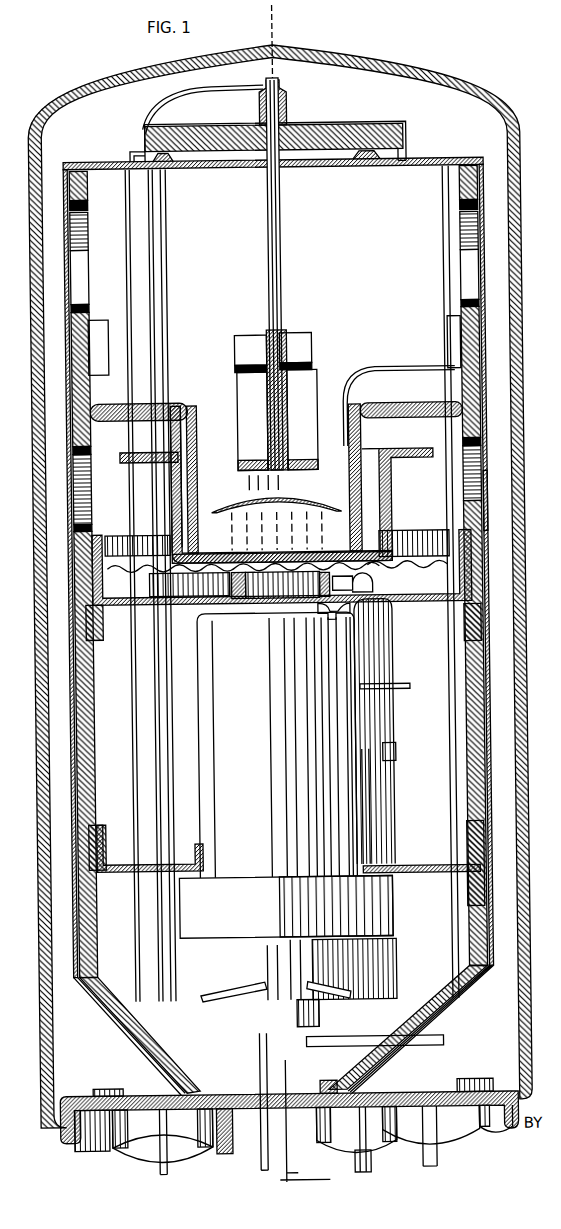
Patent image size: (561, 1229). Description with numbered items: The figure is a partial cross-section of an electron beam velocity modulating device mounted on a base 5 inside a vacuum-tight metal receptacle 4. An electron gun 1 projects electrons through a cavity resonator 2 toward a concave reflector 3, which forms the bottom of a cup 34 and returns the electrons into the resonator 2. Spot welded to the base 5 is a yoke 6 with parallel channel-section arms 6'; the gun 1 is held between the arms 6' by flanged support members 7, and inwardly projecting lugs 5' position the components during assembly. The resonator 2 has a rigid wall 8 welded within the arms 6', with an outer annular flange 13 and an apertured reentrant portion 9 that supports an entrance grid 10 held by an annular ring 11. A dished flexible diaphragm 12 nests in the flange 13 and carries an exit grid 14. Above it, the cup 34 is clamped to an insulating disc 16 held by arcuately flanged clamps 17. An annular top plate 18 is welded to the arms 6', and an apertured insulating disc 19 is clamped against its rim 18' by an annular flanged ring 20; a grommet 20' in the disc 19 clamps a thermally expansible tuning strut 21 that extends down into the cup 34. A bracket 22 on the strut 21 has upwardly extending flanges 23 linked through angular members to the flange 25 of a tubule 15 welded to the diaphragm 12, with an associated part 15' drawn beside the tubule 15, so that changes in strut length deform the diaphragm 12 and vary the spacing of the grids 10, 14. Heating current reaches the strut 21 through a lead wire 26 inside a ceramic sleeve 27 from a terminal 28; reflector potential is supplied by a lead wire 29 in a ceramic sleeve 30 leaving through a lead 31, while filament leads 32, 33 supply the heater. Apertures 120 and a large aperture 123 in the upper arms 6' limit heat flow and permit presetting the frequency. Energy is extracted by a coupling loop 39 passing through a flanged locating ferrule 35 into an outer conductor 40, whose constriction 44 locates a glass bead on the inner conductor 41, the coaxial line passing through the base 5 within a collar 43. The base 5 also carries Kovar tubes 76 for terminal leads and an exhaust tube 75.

The electron gun 1 is at (275, 701).
The cavity resonator 2 is at (276, 22).
The reflector 3 is at (240, 521).
The vacuum-tight receptacle 4 is at (521, 540).
The base 5 is at (289, 1104).
The inwardly projecting lugs 5' is at (285, 755).
The yoke 6 is at (352, 1084).
The arms 6' is at (280, 630).
The flanged support members 7 is at (422, 874).
The rigid wall portion 8 is at (152, 596).
The reentrant portion 9 is at (239, 585).
The entrance grid 10 is at (302, 575).
The annular ring 11 is at (228, 584).
The dished diaphragm 12 is at (392, 550).
The outer annular flange 13 is at (110, 535).
The exit grid 14 is at (292, 562).
The tubule 15 is at (186, 483).
The side lid 15' is at (149, 470).
The insulating disc 16 is at (173, 404).
The arcuately flanged clamps 17 is at (104, 350).
The annular top plate 18 is at (279, 620).
The rim 18' is at (267, 174).
The apertured insulating disc 19 is at (340, 131).
The annular flanged ring 20 is at (275, 142).
The grommet 20' is at (285, 102).
The tuning strut 21 is at (278, 211).
The bracket 22 is at (308, 376).
The upwardly extending flanges 23 is at (290, 338).
The flange 25 is at (413, 459).
The lead wire 26 is at (206, 98).
The insulating ceramic sleeve 27 is at (163, 278).
The terminal 28 is at (250, 1153).
The lead wire 29 is at (431, 379).
The insulating ceramic sleeve 30 is at (447, 705).
The lead 31 is at (436, 1153).
The filament lead 32 is at (266, 963).
The filament lead 33 is at (316, 963).
The cup 34 is at (192, 489).
The flanged locating ferrule 35 is at (397, 622).
The coupling loop 39 is at (376, 584).
The outer conductor 40 is at (397, 827).
The inner conductor 41 is at (345, 1164).
The collar 43 is at (396, 965).
The constriction 44 is at (380, 754).
The exhaust tube 75 is at (237, 1115).
The Kovar tubes 76 is at (122, 1151).
The apertures 120 is at (476, 509).
The aperture 123 is at (468, 304).